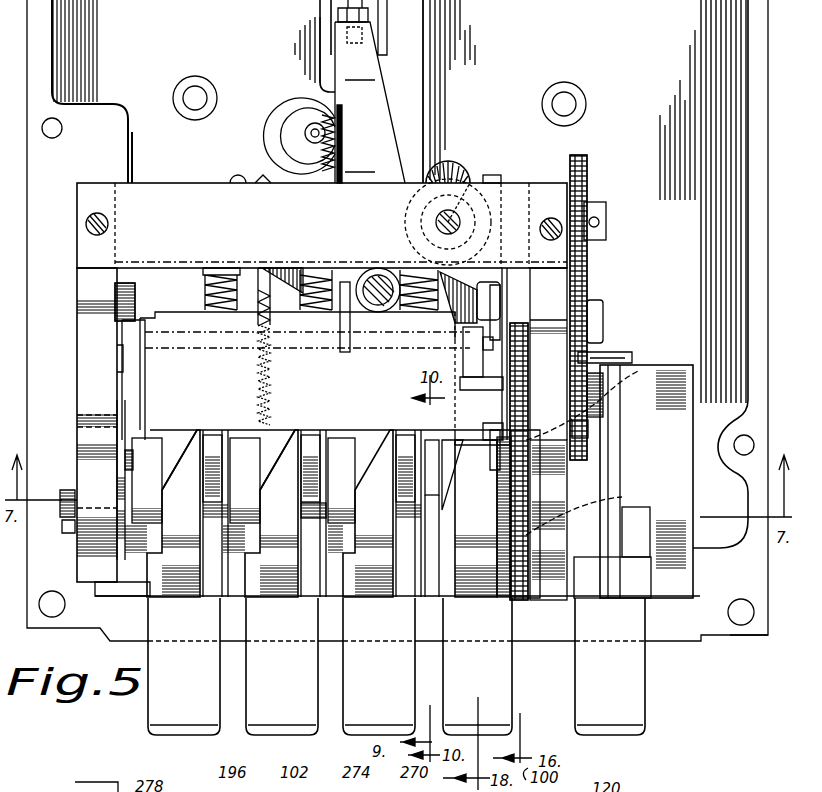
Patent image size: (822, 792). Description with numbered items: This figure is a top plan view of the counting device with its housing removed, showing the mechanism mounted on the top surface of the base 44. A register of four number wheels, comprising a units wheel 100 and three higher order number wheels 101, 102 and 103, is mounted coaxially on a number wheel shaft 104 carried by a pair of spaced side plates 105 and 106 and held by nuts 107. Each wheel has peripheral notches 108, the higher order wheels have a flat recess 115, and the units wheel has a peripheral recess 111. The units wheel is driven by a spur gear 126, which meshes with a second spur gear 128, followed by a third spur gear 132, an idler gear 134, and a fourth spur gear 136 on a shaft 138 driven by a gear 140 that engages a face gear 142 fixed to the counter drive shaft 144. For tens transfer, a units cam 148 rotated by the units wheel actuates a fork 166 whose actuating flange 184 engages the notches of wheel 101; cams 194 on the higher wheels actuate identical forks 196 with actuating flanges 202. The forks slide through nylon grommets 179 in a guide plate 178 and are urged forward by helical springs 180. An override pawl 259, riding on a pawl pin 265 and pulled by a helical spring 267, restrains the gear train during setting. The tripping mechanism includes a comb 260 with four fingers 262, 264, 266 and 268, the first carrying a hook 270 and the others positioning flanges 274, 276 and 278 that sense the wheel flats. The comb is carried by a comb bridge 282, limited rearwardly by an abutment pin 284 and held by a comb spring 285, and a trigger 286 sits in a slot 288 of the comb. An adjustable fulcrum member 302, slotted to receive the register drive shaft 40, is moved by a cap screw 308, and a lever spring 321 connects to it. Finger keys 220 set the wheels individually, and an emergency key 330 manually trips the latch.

The fulcrum member 302 is at (365, 103).
The cap screw 308 is at (338, 8).
The lever spring 321 is at (290, 158).
The guide plate 178 is at (152, 208).
The face gear 142 is at (452, 210).
The counter drive shaft 144 is at (480, 170).
The gear 140 is at (498, 176).
The shaft 138 is at (598, 202).
The fourth spur gear 136 is at (588, 253).
The idler gear 134 is at (590, 300).
The helical spring 267 is at (505, 270).
The abutment pin 284 is at (135, 280).
The comb bridge 282 is at (142, 315).
The helical spring 180 is at (220, 268).
The nylon grommet 179 is at (260, 268).
The comb spring 285 is at (276, 275).
The register drive shaft 40 is at (340, 322).
The trigger 286 is at (352, 360).
The slot 288 is at (352, 375).
The side plate 105 is at (97, 394).
The comb 260 is at (150, 372).
The finger 268 is at (145, 476).
The number wheel shaft 104 is at (55, 503).
The nut 107 is at (68, 533).
The peripheral recess 115 is at (147, 605).
The positioning flange 278 is at (140, 500).
The number wheel 103 is at (170, 598).
The positioning flange 276 is at (232, 490).
The number wheel 102 is at (270, 598).
The finger 266 is at (248, 500).
The finger 264 is at (330, 500).
The positioning flange 274 is at (330, 515).
The number wheel 101 is at (370, 598).
The actuating flange 184 is at (405, 530).
The fork 166 is at (440, 450).
The peripheral recess 111 is at (450, 598).
The finger 262 is at (450, 490).
The units wheel 100 is at (500, 598).
The second spur gear 128 is at (522, 388).
The override pawl 259 is at (520, 366).
The spur gear 126 is at (560, 505).
The pawl pin 265 is at (580, 410).
The hook 270 is at (610, 490).
The side plate 106 is at (528, 470).
The third spur gear 132 is at (600, 390).
The fork 196 is at (225, 437).
The actuating flange 202 is at (165, 490).
The peripheral notch 108 is at (218, 620).
The cam 194 is at (325, 640).
The units cam 148 is at (405, 620).
The finger key 220 is at (290, 718).
The emergency key 330 is at (627, 710).
The base 44 is at (720, 630).